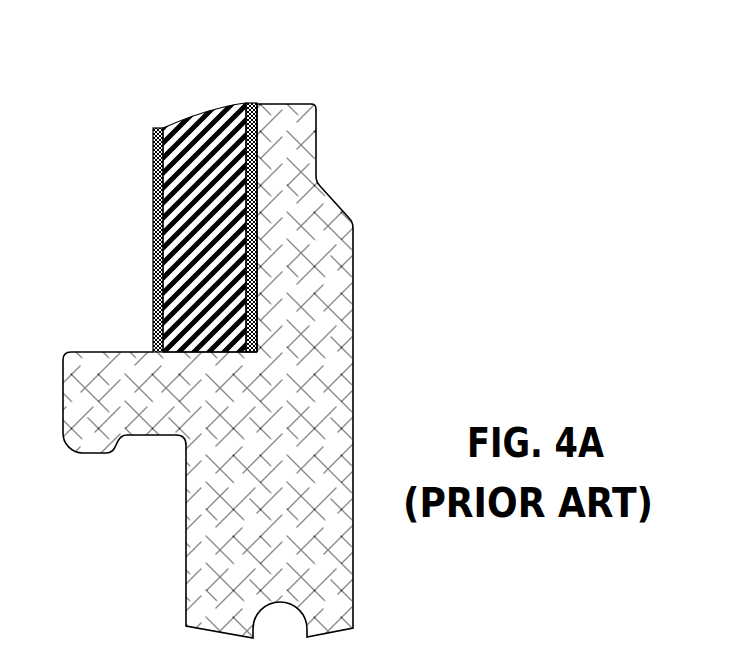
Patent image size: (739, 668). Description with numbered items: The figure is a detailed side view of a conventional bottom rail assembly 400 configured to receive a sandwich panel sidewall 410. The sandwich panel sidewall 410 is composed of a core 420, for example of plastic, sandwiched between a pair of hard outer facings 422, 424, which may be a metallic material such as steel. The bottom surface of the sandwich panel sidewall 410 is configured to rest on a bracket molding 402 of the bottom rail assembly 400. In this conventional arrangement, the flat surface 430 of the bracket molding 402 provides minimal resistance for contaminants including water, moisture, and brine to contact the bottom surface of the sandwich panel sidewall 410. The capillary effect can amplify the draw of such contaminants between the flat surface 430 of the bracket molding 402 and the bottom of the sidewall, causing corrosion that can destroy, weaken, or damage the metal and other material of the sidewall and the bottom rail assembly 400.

The bottom rail assembly 400 is at (353, 268).
The bracket molding 402 is at (125, 438).
The sandwich panel sidewall 410 is at (199, 188).
The core 420 is at (220, 108).
The hard outer facing 422 is at (157, 128).
The hard outer facing 424 is at (252, 103).
The flat surface 430 is at (194, 362).